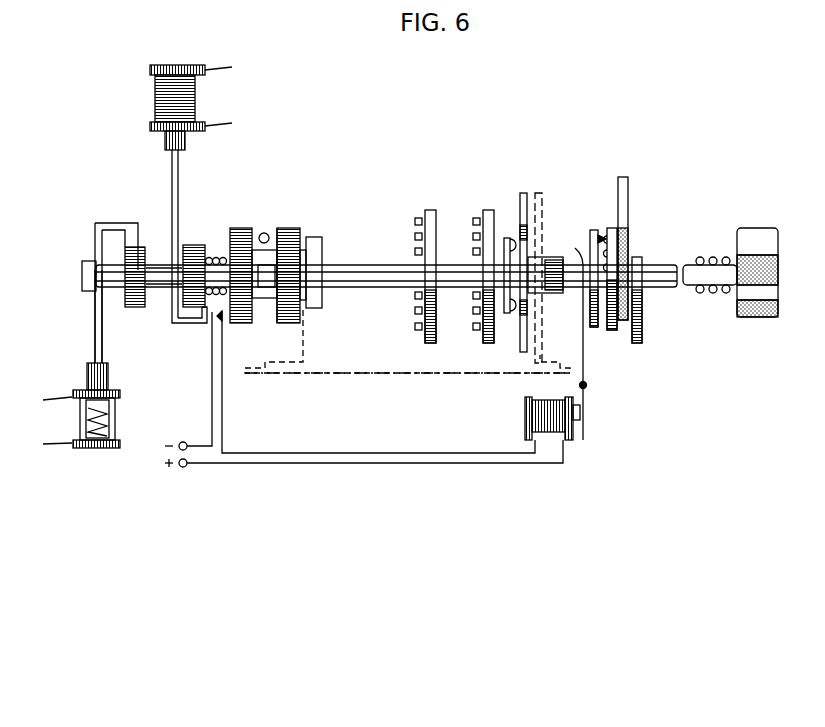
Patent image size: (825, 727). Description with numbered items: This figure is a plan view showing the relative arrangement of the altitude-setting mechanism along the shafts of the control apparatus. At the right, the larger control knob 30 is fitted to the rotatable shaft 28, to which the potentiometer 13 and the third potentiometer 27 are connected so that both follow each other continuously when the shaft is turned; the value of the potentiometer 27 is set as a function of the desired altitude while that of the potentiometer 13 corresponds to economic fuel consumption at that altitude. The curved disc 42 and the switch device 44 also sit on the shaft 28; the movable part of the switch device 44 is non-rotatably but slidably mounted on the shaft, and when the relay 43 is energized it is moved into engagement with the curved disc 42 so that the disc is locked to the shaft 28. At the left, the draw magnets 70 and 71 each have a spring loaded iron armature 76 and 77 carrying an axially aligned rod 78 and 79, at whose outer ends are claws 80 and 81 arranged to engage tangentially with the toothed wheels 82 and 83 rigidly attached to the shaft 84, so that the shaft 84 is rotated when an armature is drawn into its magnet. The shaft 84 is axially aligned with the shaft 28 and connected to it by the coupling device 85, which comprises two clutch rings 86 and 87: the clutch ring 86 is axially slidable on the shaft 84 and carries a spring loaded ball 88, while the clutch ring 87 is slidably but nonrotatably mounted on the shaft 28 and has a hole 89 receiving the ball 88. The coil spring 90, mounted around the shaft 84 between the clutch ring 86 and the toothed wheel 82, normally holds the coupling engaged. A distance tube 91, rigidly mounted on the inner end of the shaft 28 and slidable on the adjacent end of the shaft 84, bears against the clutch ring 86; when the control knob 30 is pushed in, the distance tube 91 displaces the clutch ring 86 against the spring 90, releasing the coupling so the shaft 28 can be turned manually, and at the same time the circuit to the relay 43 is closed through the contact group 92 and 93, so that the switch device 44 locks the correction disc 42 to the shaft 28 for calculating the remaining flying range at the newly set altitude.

The potentiometer 13 is at (430, 212).
The third potentiometer 27 is at (486, 212).
The shaft 28 is at (374, 290).
The larger control knob 30 is at (750, 320).
The curved disc 42 is at (620, 327).
The relay 43 is at (548, 441).
The switch device 44 is at (611, 232).
The draw magnet 70 is at (157, 108).
The draw magnet 71 is at (79, 426).
The spring loaded iron armature 76 is at (164, 140).
The spring loaded iron armature 77 is at (90, 378).
The rod 78 is at (180, 193).
The rod 79 is at (95, 335).
The claw 80 is at (195, 315).
The claw 81 is at (107, 224).
The toothed wheel 82 is at (190, 245).
The toothed wheel 83 is at (135, 306).
The shaft 84 is at (161, 290).
The coupling device 85 is at (310, 240).
The clutch ring 86 is at (241, 228).
The clutch ring 87 is at (290, 323).
The spring loaded ball 88 is at (264, 233).
The hole 89 is at (277, 228).
The coil spring 90 is at (215, 257).
The distance tube 91 is at (263, 292).
The contact group 92 is at (222, 425).
The contact group 93 is at (210, 425).